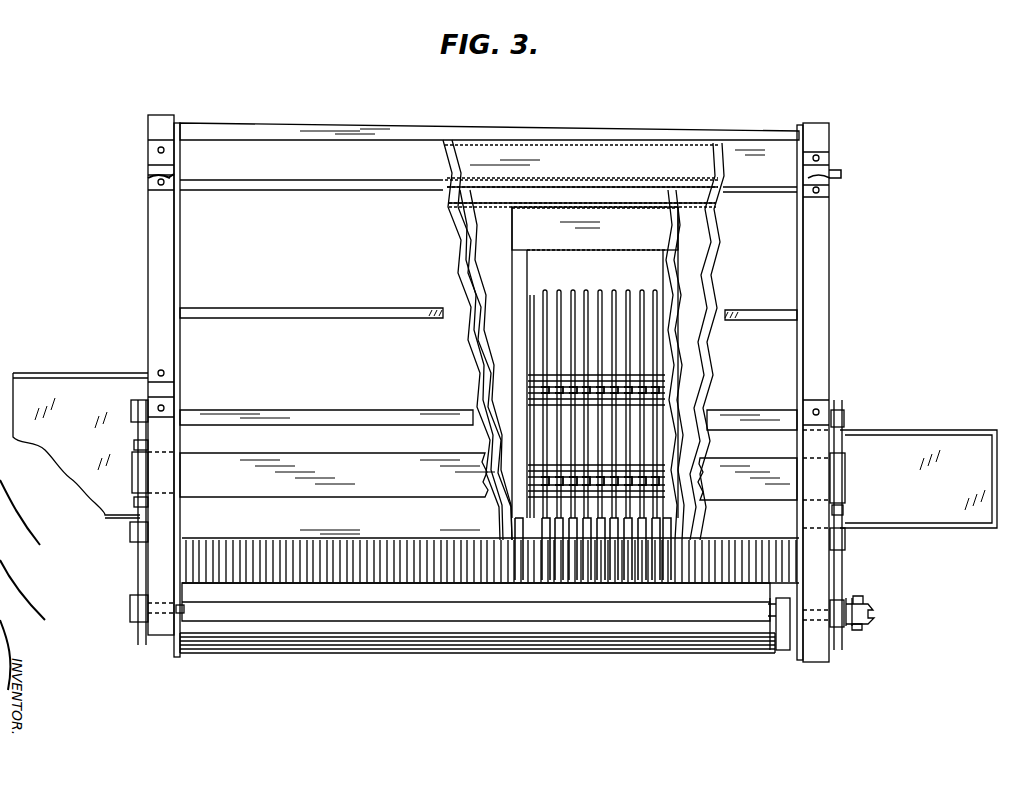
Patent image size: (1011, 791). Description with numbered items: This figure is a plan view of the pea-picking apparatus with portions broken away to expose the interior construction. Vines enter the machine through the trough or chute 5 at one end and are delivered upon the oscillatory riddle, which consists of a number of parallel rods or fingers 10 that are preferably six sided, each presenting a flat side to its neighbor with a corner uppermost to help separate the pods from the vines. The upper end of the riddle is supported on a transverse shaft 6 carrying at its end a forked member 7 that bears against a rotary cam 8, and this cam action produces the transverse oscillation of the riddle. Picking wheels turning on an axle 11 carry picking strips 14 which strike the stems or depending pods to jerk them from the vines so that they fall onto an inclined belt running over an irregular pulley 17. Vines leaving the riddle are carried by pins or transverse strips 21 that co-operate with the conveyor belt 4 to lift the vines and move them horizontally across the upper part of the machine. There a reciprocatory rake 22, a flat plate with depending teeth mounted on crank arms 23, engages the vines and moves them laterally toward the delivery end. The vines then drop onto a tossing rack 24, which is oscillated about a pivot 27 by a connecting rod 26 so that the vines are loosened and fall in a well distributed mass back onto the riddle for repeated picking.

The conveyor belt 4 is at (685, 226).
The trough or chute 5 is at (85, 470).
The transverse shaft 6 is at (818, 606).
The forked member 7 is at (855, 608).
The rotary cam 8 is at (858, 626).
The rods or fingers 10 is at (572, 292).
The axle 11 is at (667, 388).
The picking strips 14 is at (667, 375).
The irregular pulley 17 is at (788, 266).
The pins or transverse strips 21 is at (762, 137).
The reciprocatory rake 22 is at (763, 493).
The crank arms 23 is at (134, 446).
The tossing rack 24 is at (556, 584).
The connecting rod 26 is at (777, 633).
The pivot 27 is at (778, 627).